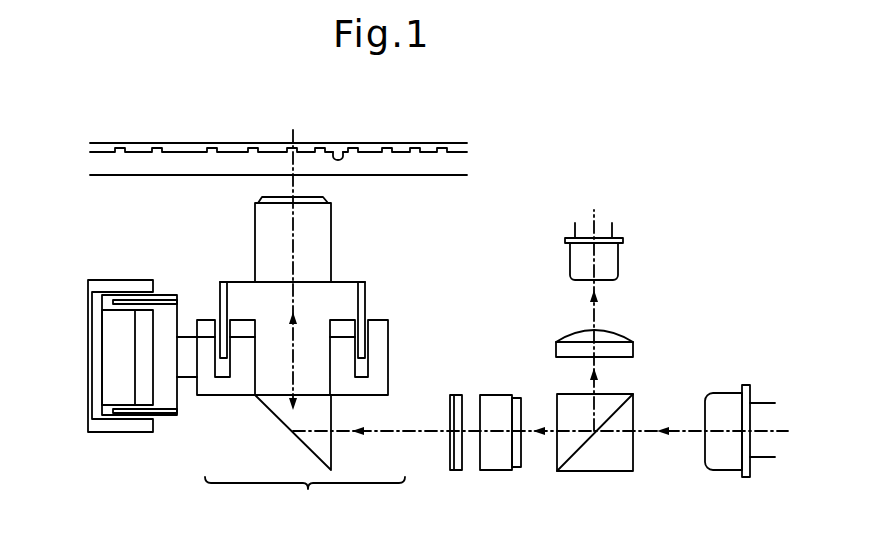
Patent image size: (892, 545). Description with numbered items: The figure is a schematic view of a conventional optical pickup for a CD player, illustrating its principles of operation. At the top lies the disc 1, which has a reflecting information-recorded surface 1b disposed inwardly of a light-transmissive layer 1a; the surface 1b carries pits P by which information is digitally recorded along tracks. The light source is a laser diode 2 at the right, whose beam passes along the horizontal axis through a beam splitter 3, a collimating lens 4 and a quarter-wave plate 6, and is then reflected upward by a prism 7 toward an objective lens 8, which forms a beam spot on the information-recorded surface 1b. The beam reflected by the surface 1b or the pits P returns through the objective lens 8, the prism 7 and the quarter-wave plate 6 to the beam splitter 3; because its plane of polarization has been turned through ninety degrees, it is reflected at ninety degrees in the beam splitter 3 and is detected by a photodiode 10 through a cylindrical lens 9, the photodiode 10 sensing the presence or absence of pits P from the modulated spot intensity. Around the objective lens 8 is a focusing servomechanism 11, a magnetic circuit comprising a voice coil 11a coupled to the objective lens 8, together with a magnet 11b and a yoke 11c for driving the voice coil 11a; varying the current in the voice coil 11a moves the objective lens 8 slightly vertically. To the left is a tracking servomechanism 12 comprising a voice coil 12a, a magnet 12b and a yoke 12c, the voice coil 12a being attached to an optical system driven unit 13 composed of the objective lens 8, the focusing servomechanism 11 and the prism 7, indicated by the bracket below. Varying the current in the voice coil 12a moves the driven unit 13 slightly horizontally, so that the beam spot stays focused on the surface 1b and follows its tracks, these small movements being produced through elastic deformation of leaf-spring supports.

The disc 1 is at (232, 142).
The light-transmissive layer 1a is at (370, 167).
The information-recorded surface 1b is at (343, 153).
The pits P is at (297, 142).
The laser diode 2 is at (720, 460).
The beam splitter 3 is at (617, 463).
The collimating lens 4 is at (493, 470).
The quarter-wave plate 6 is at (455, 470).
The prism 7 is at (277, 410).
The objective lens 8 is at (272, 196).
The cylindrical lens 9 is at (617, 338).
The photodiode 10 is at (612, 255).
The focusing servomechanism 11 is at (323, 299).
The voice coil 11a is at (365, 302).
The magnet 11b is at (347, 365).
The yoke 11c is at (377, 337).
The tracking servomechanism 12 is at (122, 332).
The voice coil 12a is at (165, 298).
The magnet 12b is at (112, 388).
The yoke 12c is at (112, 287).
The optical system driven unit 13 is at (305, 497).